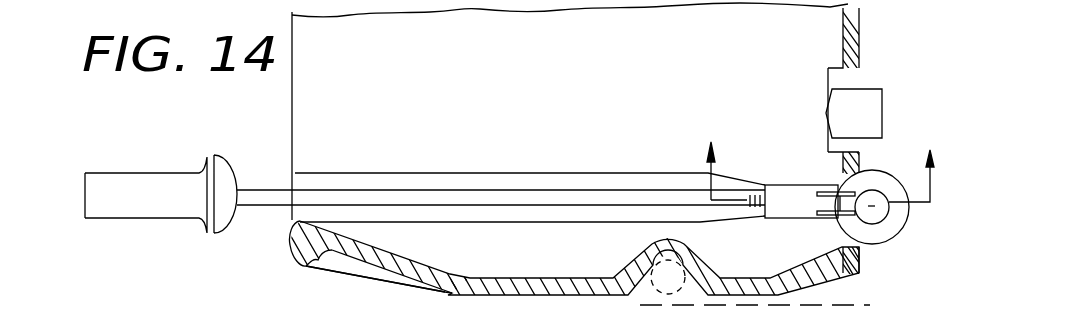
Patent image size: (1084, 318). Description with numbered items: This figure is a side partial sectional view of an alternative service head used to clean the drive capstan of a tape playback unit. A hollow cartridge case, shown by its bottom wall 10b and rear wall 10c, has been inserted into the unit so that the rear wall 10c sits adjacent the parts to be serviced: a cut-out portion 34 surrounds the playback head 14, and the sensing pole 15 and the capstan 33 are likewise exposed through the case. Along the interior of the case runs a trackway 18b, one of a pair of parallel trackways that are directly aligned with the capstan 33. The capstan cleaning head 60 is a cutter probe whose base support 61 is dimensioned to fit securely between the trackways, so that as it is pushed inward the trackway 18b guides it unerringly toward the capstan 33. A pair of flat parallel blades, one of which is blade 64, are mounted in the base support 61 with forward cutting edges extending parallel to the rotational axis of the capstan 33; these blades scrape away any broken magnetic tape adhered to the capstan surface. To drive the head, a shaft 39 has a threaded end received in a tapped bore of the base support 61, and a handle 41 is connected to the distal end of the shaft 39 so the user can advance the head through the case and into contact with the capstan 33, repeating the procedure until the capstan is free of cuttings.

The bottom wall 10b is at (580, 263).
The rear wall 10c is at (860, 33).
The playback head 14 is at (882, 112).
The sensing pole 15 is at (826, 195).
The trackway 18b is at (533, 176).
The capstan 33 is at (880, 224).
The cut-out portion 34 is at (853, 78).
The shaft 39 is at (258, 213).
The handle 41 is at (112, 212).
The capstan cleaning head 60 is at (818, 227).
The base support 61 is at (792, 186).
The blade 64 is at (379, 292).